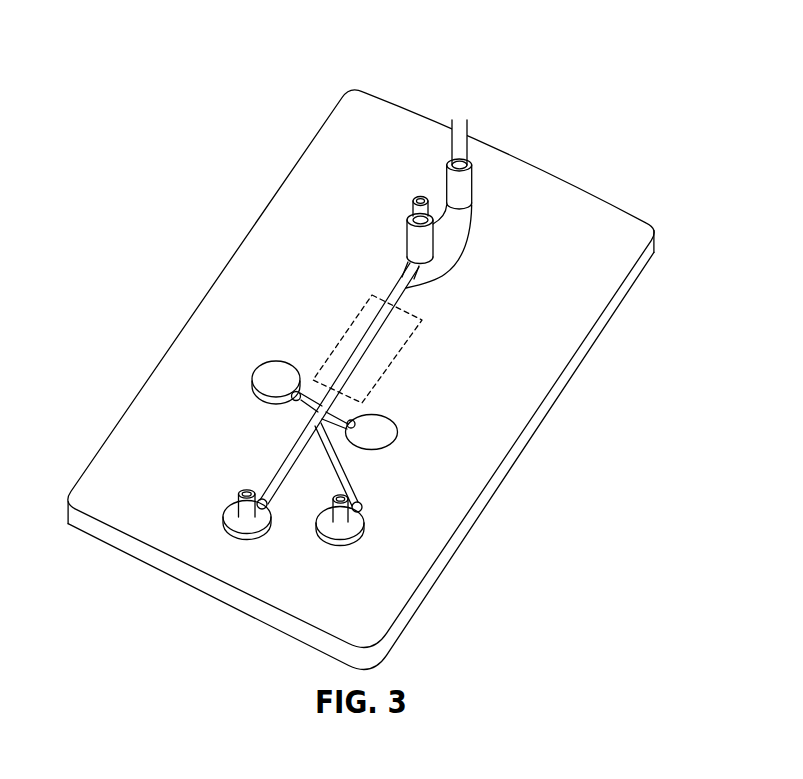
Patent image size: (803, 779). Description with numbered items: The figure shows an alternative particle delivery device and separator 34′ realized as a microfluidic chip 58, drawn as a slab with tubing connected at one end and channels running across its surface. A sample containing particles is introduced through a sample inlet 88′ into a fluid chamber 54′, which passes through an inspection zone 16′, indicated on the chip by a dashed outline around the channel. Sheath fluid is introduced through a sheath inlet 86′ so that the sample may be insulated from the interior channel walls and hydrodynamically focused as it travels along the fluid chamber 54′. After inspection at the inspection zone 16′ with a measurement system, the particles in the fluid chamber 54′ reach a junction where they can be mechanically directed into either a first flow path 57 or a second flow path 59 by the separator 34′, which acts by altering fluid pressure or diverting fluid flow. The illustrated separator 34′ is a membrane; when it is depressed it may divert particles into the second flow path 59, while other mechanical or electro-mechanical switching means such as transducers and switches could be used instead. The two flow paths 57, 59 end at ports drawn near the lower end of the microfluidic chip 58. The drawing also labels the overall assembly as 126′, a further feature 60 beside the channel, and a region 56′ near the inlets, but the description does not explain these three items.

The microfluidic device 126′ is at (193, 510).
The inspection zone 16′ is at (357, 316).
The separator 34′ is at (278, 385).
The first flow path 57 is at (282, 466).
The second flow path 59 is at (344, 466).
The flow channel 60 is at (378, 332).
The microfluidic chip 58 is at (471, 129).
The sheath inlet 86′ is at (452, 142).
The sample inlet 88′ is at (420, 247).
The tube junction 56′ is at (450, 254).
The fluid chamber 54′ is at (425, 280).